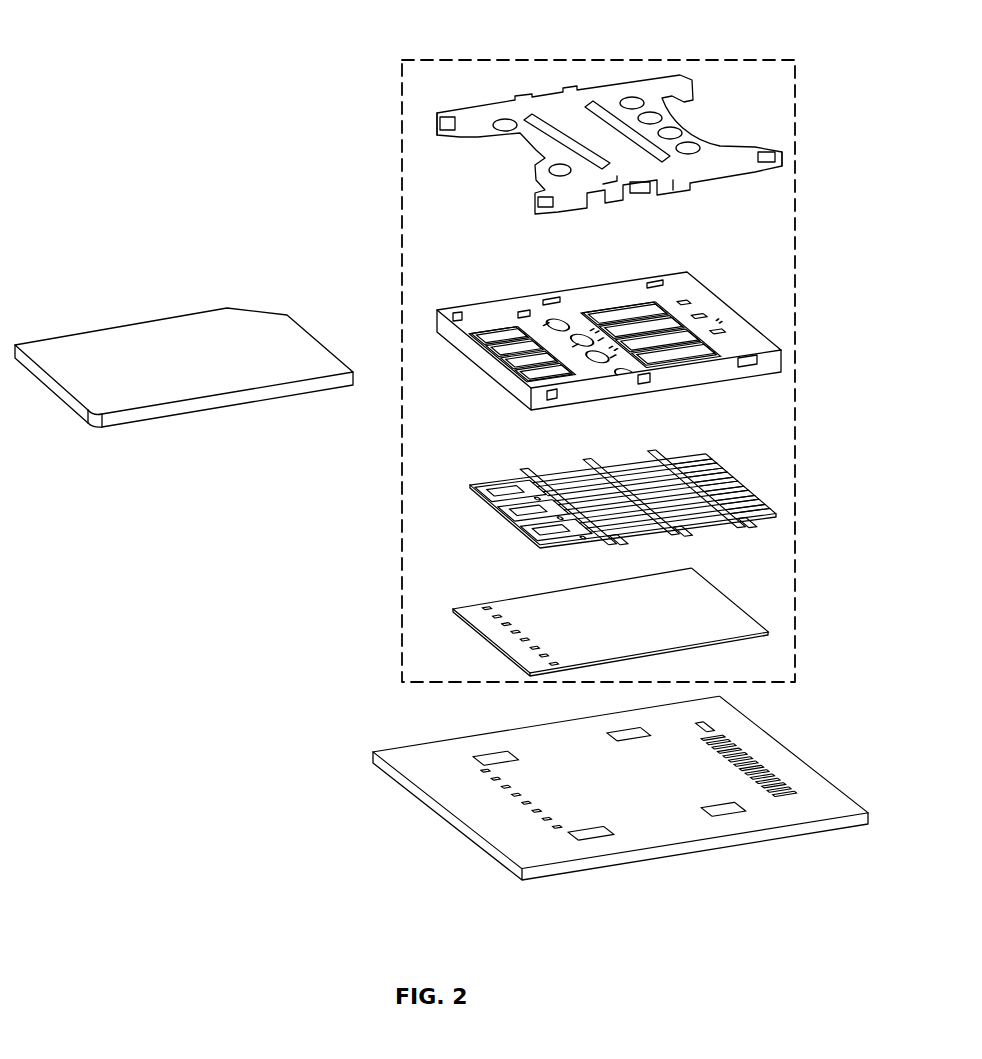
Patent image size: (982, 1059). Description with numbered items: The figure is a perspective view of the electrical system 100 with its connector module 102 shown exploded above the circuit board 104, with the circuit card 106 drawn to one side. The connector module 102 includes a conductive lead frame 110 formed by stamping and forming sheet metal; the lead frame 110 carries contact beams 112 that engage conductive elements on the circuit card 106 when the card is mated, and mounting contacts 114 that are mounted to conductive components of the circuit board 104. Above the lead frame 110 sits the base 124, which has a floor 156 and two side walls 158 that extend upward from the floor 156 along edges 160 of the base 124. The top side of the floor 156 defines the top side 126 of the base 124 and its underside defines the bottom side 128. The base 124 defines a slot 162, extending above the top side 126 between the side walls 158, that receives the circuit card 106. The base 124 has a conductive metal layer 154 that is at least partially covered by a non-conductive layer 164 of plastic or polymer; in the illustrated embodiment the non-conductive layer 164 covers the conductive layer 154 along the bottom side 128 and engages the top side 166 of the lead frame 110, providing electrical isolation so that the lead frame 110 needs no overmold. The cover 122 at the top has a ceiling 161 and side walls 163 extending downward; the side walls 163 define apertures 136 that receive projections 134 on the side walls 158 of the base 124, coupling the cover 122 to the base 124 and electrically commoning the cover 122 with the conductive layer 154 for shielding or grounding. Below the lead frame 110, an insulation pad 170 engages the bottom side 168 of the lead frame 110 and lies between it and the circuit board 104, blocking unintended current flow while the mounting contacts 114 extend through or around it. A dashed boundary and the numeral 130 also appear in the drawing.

The electrical system 100 is at (180, 104).
The connector module 102 is at (797, 163).
The circuit board 104 is at (402, 755).
The circuit card 106 is at (124, 328).
The lead frame 110 is at (740, 512).
The contact beams 112 is at (508, 500).
The mounting contacts 114 is at (770, 495).
The cover 122 is at (682, 123).
The base 124 is at (728, 314).
The top side 126 is at (695, 305).
The bottom side 128 is at (590, 398).
The contact windows 130 is at (485, 328).
The projections 134 is at (648, 382).
The apertures 136 is at (645, 194).
The conductive layer 154 is at (572, 313).
The floor 156 is at (768, 346).
The side walls 158 is at (590, 295).
The edges 160 is at (521, 310).
The ceiling 161 is at (573, 118).
The slot 162 is at (733, 335).
The side walls 163 is at (463, 130).
The non-conductive layer 164 is at (733, 370).
The top side 166 is at (606, 483).
The bottom side 168 is at (590, 532).
The insulation pad 170 is at (710, 605).